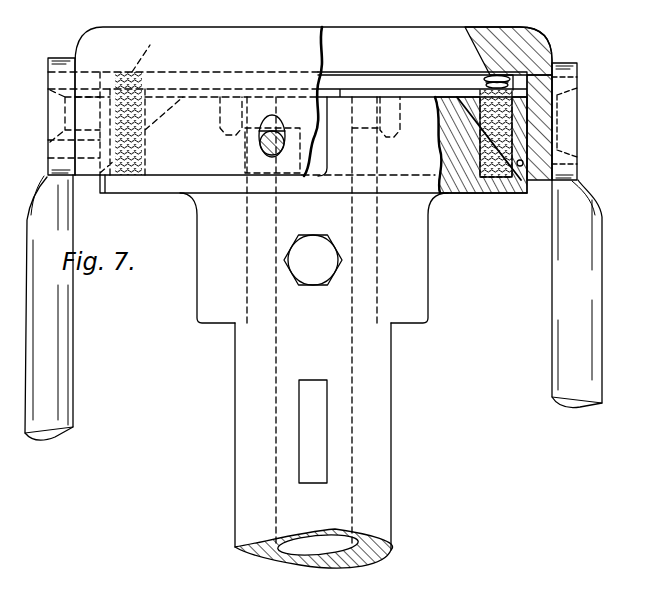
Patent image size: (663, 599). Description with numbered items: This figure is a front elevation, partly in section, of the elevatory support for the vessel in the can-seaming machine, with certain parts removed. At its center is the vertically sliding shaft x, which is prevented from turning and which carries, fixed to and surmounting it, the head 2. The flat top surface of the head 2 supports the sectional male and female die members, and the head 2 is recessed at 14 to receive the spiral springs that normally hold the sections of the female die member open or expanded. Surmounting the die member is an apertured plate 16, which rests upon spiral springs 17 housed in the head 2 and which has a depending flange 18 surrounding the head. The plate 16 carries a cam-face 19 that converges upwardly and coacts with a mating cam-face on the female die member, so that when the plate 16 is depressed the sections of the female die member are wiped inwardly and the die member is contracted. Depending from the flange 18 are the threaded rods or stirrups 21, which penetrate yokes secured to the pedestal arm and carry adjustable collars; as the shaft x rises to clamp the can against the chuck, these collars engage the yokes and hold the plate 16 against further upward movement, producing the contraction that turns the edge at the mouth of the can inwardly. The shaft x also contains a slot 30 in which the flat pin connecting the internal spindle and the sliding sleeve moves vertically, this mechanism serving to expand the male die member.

The head 2 is at (428, 222).
The recess 14 is at (325, 147).
The apertured plate 16 is at (511, 28).
The spiral springs 17 is at (540, 48).
The depending flange 18 is at (578, 120).
The cam-face 19 is at (478, 47).
The threaded rods or stirrups 21 is at (602, 325).
The slot 30 is at (315, 477).
The shaft or spindle x is at (391, 392).